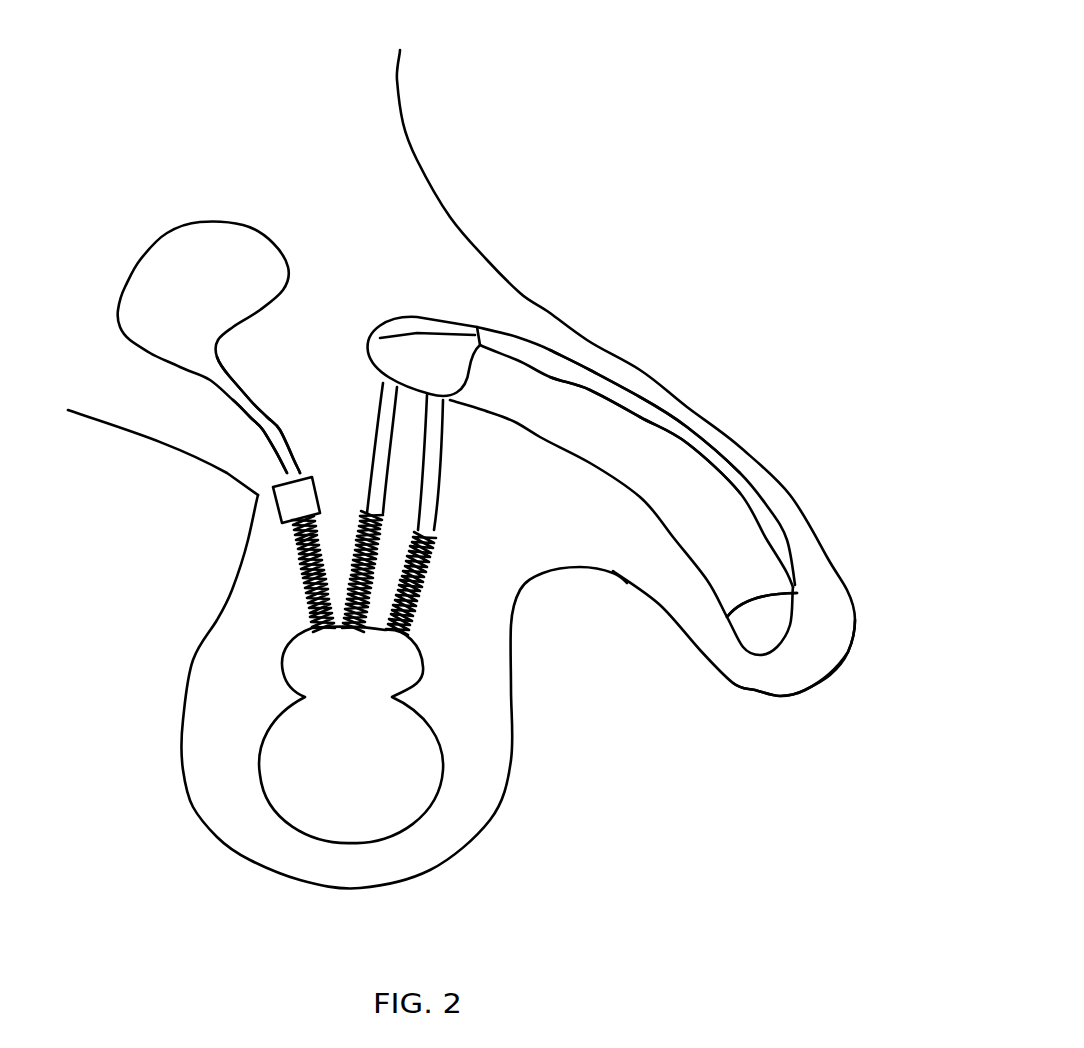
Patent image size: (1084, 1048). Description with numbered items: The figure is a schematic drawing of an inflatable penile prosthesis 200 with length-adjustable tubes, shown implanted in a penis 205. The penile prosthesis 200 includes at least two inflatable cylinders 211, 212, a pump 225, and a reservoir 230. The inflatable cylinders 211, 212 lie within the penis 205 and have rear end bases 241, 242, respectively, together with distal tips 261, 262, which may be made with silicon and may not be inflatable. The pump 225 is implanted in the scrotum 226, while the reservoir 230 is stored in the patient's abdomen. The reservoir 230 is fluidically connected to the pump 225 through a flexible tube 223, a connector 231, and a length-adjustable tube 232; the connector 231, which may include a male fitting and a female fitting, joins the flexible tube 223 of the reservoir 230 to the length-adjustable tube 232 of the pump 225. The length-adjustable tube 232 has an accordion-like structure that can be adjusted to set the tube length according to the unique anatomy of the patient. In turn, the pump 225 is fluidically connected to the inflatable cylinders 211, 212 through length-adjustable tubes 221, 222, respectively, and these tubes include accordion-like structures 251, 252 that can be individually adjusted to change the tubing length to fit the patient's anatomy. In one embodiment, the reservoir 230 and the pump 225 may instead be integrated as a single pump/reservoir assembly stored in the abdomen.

The penile prosthesis 200 is at (120, 128).
The penis 205 is at (570, 323).
The inflatable cylinder 211 is at (705, 503).
The inflatable cylinder 212 is at (688, 443).
The length-adjustable tube 221 is at (385, 438).
The length-adjustable tube 222 is at (425, 530).
The flexible tube 223 is at (265, 415).
The pump 225 is at (393, 723).
The scrotum 226 is at (490, 813).
The reservoir 230 is at (202, 233).
The connector 231 is at (300, 500).
The length-adjustable tube 232 is at (303, 577).
The rear end base 241 is at (385, 357).
The rear end base 242 is at (448, 327).
The accordion-like structure 251 is at (363, 577).
The accordion-like structure 252 is at (392, 618).
The distal tip 261 is at (757, 632).
The distal tip 262 is at (797, 583).